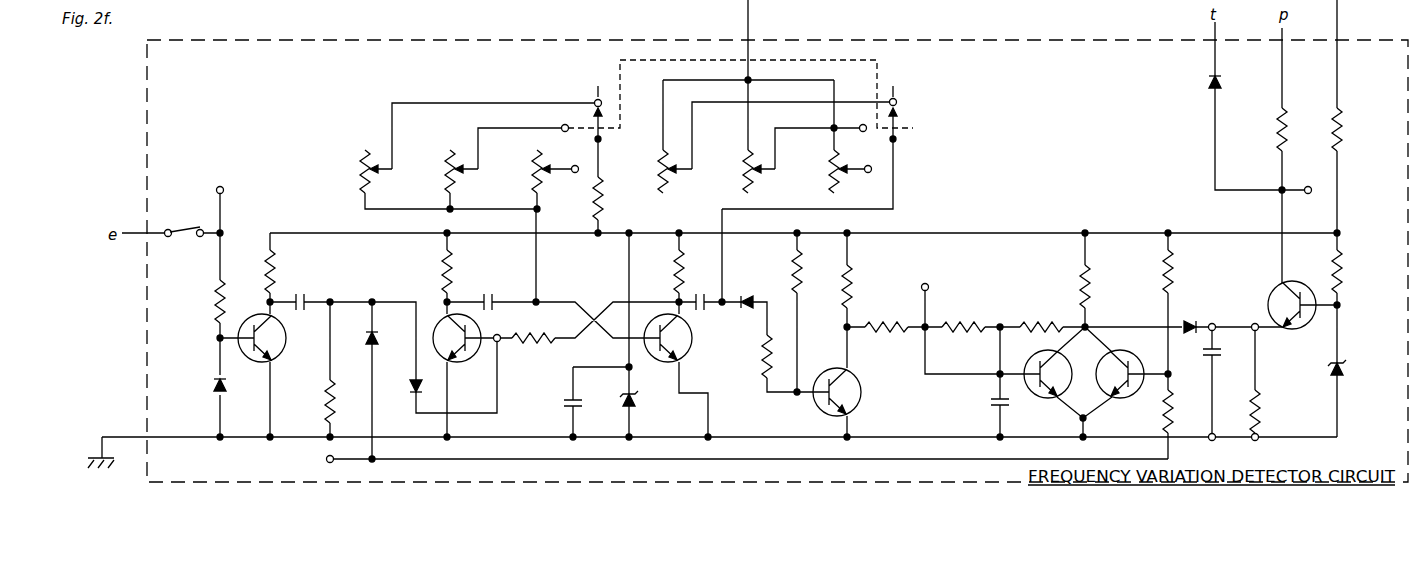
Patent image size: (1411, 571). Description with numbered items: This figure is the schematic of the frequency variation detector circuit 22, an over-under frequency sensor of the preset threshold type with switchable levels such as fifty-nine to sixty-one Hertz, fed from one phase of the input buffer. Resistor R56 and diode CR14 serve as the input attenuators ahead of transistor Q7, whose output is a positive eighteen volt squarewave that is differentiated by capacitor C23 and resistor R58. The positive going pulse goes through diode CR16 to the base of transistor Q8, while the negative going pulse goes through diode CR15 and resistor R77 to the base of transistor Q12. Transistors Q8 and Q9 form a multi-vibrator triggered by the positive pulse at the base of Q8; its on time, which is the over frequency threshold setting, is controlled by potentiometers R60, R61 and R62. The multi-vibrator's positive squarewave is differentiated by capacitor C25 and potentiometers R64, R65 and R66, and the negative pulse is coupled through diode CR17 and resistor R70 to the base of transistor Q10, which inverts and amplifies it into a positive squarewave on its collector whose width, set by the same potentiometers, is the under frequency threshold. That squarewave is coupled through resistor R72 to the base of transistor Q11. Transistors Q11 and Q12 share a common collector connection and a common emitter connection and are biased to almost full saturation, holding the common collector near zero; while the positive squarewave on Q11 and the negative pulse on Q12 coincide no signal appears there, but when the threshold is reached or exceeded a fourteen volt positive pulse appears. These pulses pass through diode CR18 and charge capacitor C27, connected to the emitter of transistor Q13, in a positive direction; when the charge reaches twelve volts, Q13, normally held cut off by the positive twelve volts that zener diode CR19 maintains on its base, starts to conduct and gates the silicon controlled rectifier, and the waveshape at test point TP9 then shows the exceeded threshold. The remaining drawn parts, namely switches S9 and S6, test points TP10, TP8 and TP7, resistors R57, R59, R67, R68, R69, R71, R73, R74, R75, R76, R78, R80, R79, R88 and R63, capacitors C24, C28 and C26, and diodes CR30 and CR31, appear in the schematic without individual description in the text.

The frequency variation detector circuit 22 is at (147, 108).
The test point TP10 is at (218, 181).
The switch S9 is at (184, 222).
The resistor R56 is at (201, 301).
The diode CR14 is at (198, 385).
The resistor R57 is at (251, 269).
The transistor Q7 is at (270, 343).
The capacitor C23 is at (303, 287).
The resistor R58 is at (311, 402).
The diode CR15 is at (393, 338).
The diode CR16 is at (398, 386).
The test point TP8 is at (313, 458).
The resistor R59 is at (427, 271).
The transistor Q8 is at (457, 348).
The capacitor C24 is at (493, 286).
The resistor R67 is at (533, 356).
The capacitor C28 is at (556, 402).
The zener diode CR30 is at (650, 406).
The transistor Q9 is at (662, 334).
The resistor R68 is at (660, 271).
The capacitor C25 is at (707, 301).
The diode CR17 is at (748, 292).
The resistor R69 is at (779, 271).
The resistor R70 is at (741, 356).
The transistor Q10 is at (852, 396).
The resistor R71 is at (864, 286).
The resistor R72 is at (886, 345).
The test point TP7 is at (925, 279).
The resistor R73 is at (963, 310).
The capacitor C26 is at (982, 404).
The resistor R74 is at (1040, 310).
The resistor R75 is at (1102, 290).
The transistor Q11 is at (1048, 383).
The transistor Q12 is at (1120, 383).
The resistor R76 is at (1185, 271).
The resistor R77 is at (1185, 411).
The diode CR18 is at (1192, 318).
The capacitor C27 is at (1227, 352).
The resistor R78 is at (1278, 411).
The transistor Q13 is at (1279, 305).
The resistor R80 is at (1354, 271).
The zener diode CR19 is at (1366, 369).
The diode CR31 is at (1191, 82).
The resistor R79 is at (1263, 129).
The test point TP9 is at (1308, 181).
The resistor R88 is at (1355, 129).
The potentiometer R60 is at (348, 171).
The potentiometer R61 is at (434, 171).
The potentiometer R62 is at (521, 171).
The resistor R63 is at (579, 198).
The potentiometer R64 is at (647, 171).
The potentiometer R65 is at (733, 171).
The potentiometer R66 is at (818, 171).
The switch S6 is at (730, 136).